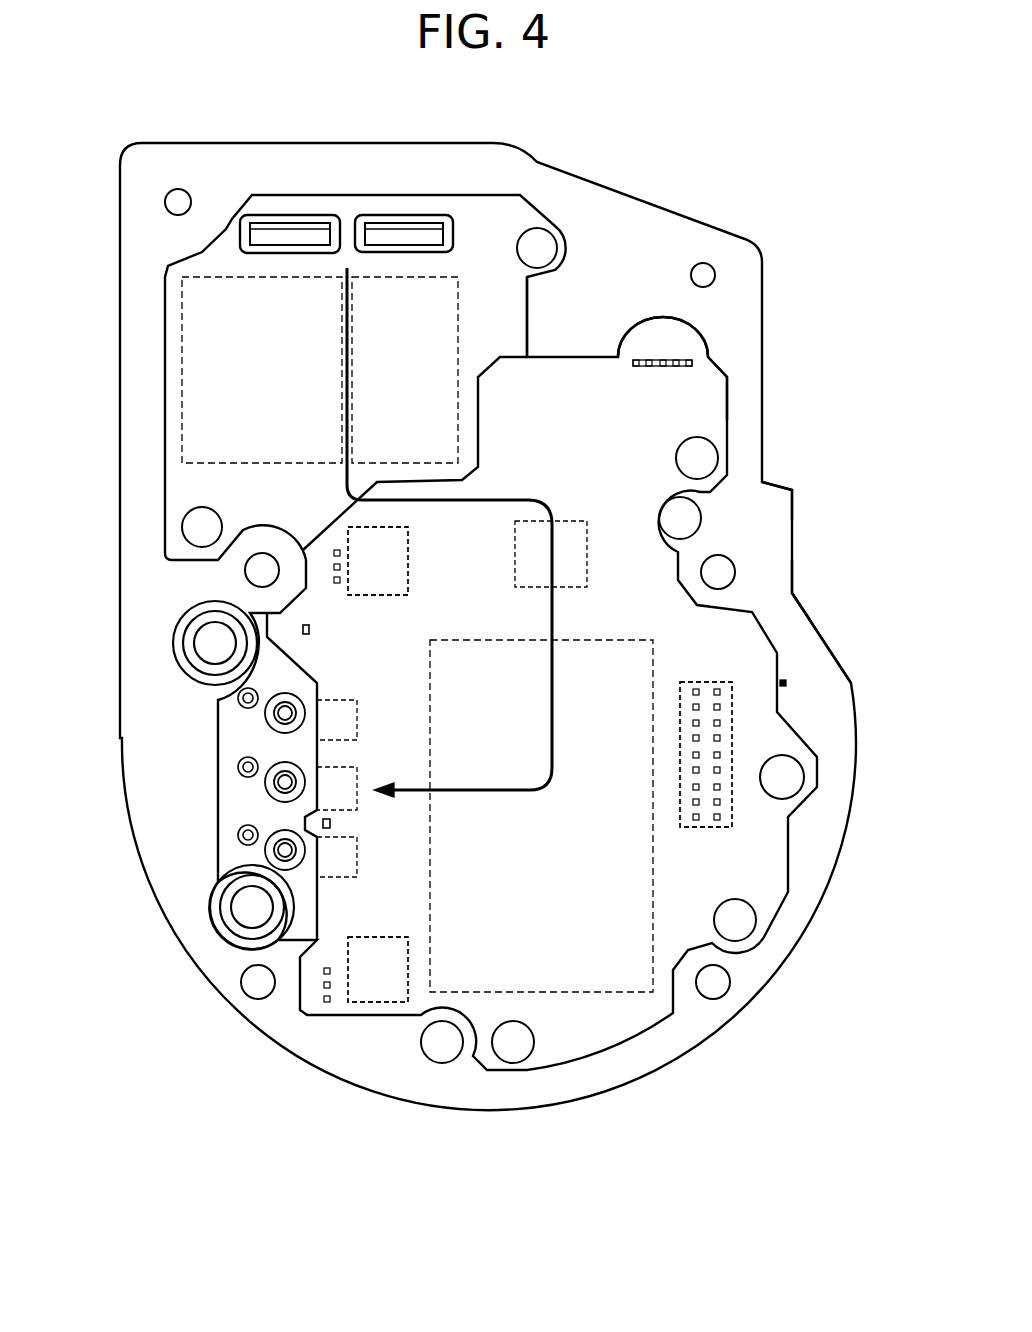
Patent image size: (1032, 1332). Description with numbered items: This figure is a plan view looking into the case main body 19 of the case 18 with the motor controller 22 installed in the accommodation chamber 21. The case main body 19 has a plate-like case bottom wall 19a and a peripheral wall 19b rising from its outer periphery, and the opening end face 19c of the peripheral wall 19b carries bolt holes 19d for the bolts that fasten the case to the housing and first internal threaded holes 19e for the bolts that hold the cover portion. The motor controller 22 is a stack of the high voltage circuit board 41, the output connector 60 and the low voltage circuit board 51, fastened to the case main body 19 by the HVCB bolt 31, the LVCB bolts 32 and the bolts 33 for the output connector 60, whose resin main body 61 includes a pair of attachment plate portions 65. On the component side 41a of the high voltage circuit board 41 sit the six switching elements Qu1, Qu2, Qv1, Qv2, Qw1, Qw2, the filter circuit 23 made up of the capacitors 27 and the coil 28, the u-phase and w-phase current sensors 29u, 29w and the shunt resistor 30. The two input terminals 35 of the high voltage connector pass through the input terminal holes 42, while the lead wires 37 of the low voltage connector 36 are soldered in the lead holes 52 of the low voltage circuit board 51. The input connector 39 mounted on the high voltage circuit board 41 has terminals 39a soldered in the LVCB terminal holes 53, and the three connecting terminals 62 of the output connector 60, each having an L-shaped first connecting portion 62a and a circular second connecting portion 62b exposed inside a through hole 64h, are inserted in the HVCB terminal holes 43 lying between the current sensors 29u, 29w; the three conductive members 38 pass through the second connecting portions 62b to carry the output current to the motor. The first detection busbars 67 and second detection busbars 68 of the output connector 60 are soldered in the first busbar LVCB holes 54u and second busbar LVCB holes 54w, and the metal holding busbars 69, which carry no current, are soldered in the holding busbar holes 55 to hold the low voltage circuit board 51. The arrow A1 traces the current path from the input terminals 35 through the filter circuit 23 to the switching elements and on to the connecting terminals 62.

The case 18 is at (682, 214).
The case main body 19 is at (598, 184).
The case bottom wall 19a is at (795, 598).
The peripheral wall 19b is at (806, 628).
The opening end face 19c is at (793, 493).
The bolt holes 19d is at (255, 570).
The first internal threaded holes 19e is at (178, 190).
The accommodation chamber 21 is at (788, 683).
The motor controller 22 is at (733, 340).
The filter circuit 23 is at (243, 370).
The capacitors 27 is at (262, 370).
The coil 28 is at (405, 370).
The u-phase current sensor 29u is at (410, 548).
The w-phase current sensor 29w is at (378, 1003).
The shunt resistor 30 is at (588, 575).
The HVCB bolt 31 is at (537, 240).
The LVCB bolts 32 is at (712, 452).
The bolts 33 is at (196, 652).
The input terminals 35 is at (373, 224).
The low voltage connector 36 is at (630, 338).
The lead wires 37 is at (676, 360).
The conductive members 38 is at (238, 698).
The input connector 39 is at (735, 822).
The terminals 39a is at (721, 770).
The high voltage circuit board 41 is at (480, 195).
The component side 41a is at (527, 322).
The input terminal holes 42 is at (256, 226).
The HVCB terminal holes 43 is at (358, 722).
The low voltage circuit board 51 is at (727, 377).
The lead holes 52 is at (672, 368).
The LVCB terminal holes 53 is at (693, 770).
The first busbar LVCB holes 54u is at (341, 553).
The second busbar LVCB holes 54w is at (331, 971).
The holding busbar holes 55 is at (312, 630).
The output connector 60 is at (176, 632).
The resin main body 61 is at (240, 947).
The connecting terminals 62 is at (266, 713).
The first connecting portion 62a is at (352, 700).
The second connecting portion 62b is at (275, 730).
The through holes 64h is at (302, 700).
The attachment plate portions 65 is at (185, 645).
The first detection busbars 67 is at (333, 580).
The second detection busbars 68 is at (326, 974).
The holding busbars 69 is at (298, 660).
The arrow A1 is at (548, 500).
The switching element Qu1 is at (580, 916).
The switching element Qu2 is at (580, 916).
The switching element Qv1 is at (580, 916).
The switching element Qv2 is at (580, 916).
The switching element Qw1 is at (580, 916).
The switching element Qw2 is at (605, 992).